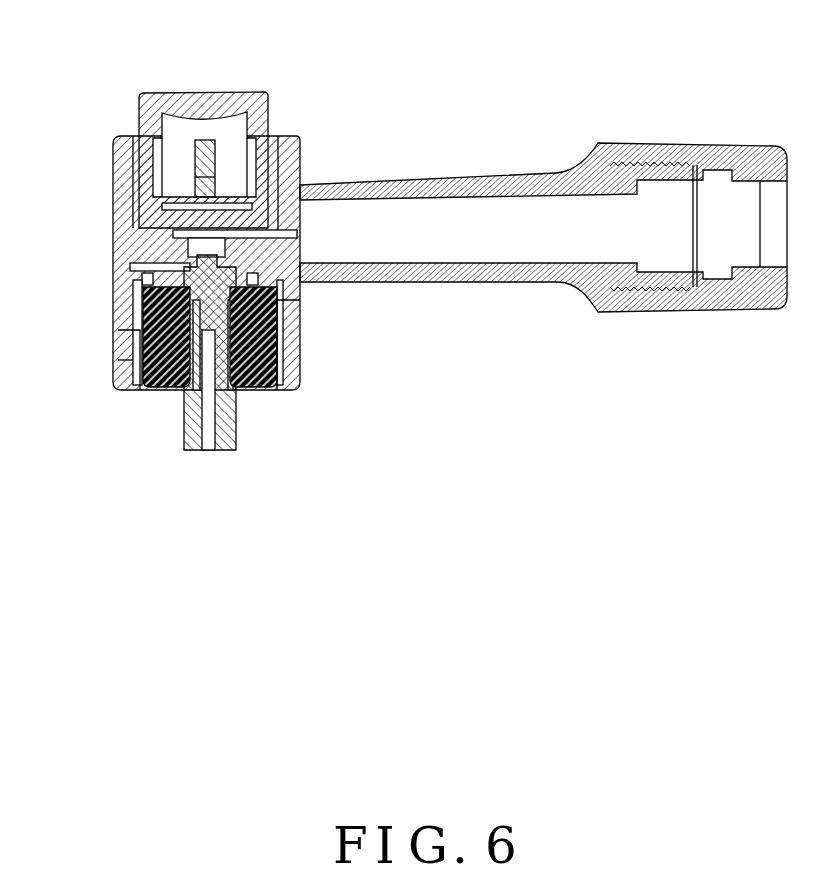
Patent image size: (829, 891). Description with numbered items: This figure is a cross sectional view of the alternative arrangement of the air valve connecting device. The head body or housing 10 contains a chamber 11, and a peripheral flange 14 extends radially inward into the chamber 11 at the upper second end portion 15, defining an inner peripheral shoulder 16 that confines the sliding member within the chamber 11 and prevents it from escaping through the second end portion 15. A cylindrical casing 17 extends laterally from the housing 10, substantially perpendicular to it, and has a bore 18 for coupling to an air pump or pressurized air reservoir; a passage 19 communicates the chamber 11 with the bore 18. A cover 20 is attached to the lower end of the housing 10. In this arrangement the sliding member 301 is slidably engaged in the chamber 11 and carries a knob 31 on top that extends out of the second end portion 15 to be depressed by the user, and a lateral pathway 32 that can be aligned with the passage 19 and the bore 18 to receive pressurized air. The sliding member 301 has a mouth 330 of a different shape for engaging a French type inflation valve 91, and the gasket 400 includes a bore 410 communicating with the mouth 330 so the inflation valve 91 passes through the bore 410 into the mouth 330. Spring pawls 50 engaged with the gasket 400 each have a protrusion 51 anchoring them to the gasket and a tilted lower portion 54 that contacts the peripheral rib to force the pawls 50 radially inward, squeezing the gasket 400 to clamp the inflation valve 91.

The housing 10 is at (209, 262).
The chamber 11 is at (115, 188).
The peripheral flange 14 is at (267, 138).
The second end portion 15 is at (290, 138).
The inner peripheral shoulder 16 is at (117, 167).
The cylindrical casing 17 is at (535, 188).
The bore 18 is at (448, 252).
The passage 19 is at (297, 232).
The cover 20 is at (117, 350).
The knob 31 is at (160, 95).
The pathway 32 is at (130, 248).
The pawls 50 is at (120, 375).
The protrusion 51 is at (120, 335).
The lower portion 54 is at (268, 390).
The inflation valve 91 is at (230, 452).
The sliding member 301 is at (117, 222).
The mouth 330 is at (150, 267).
The gasket 400 is at (302, 340).
The bore 410 is at (190, 398).